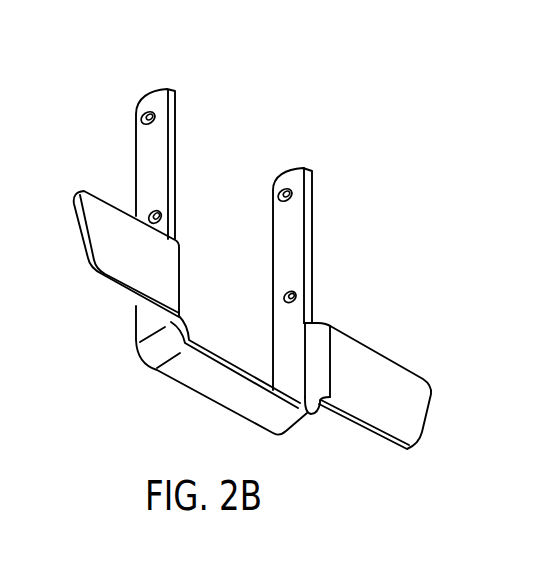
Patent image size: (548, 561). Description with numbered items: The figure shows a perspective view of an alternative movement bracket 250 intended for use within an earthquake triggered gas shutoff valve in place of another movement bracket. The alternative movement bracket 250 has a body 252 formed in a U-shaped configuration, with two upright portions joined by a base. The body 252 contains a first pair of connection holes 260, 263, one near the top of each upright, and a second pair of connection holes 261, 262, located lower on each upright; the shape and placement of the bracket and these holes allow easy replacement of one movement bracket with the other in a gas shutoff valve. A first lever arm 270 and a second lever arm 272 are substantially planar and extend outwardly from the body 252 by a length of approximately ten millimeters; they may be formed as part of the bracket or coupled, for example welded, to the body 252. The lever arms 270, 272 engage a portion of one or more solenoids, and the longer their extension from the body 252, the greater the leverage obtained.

The alternative movement bracket 250 is at (288, 123).
The body 252 is at (293, 240).
The connection hole 260 is at (141, 121).
The connection hole 261 is at (161, 215).
The connection hole 262 is at (300, 297).
The connection hole 263 is at (292, 188).
The first lever arm 270 is at (118, 258).
The second lever arm 272 is at (385, 372).